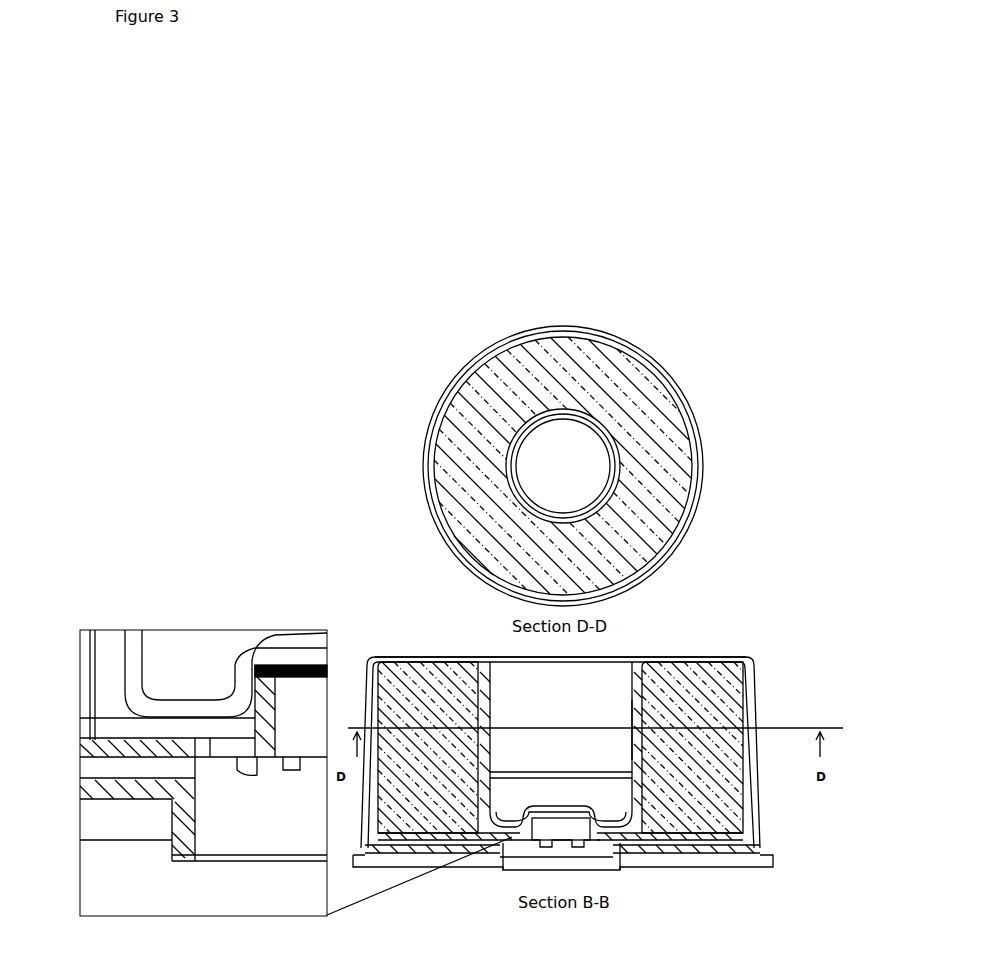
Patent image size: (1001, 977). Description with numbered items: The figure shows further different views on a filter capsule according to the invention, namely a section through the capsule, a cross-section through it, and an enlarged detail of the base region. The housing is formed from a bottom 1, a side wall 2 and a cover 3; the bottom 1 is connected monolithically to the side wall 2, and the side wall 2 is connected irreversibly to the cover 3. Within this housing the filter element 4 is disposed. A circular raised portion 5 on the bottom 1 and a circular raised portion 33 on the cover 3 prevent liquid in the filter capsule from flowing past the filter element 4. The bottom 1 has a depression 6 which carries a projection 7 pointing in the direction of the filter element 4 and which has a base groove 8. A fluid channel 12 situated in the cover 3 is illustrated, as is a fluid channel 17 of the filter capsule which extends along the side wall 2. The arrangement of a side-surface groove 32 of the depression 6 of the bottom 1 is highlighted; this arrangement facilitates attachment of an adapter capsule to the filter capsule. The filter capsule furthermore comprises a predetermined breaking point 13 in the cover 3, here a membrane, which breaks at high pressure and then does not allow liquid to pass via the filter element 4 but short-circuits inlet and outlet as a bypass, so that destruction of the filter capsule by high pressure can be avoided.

The bottom 1 is at (712, 660).
The side wall 2 is at (545, 327).
The cover 3 is at (767, 867).
The filter element 4 is at (622, 383).
The circular raised portion 5 is at (457, 665).
The depression 6 is at (583, 695).
The projection 7 is at (640, 725).
The base groove 8 is at (625, 828).
The fluid channel 12 is at (743, 827).
The predetermined breaking point 13 is at (503, 867).
The fluid channel 17 is at (640, 726).
The side-surface groove 32 is at (632, 770).
The circular raised portion 33 is at (455, 827).